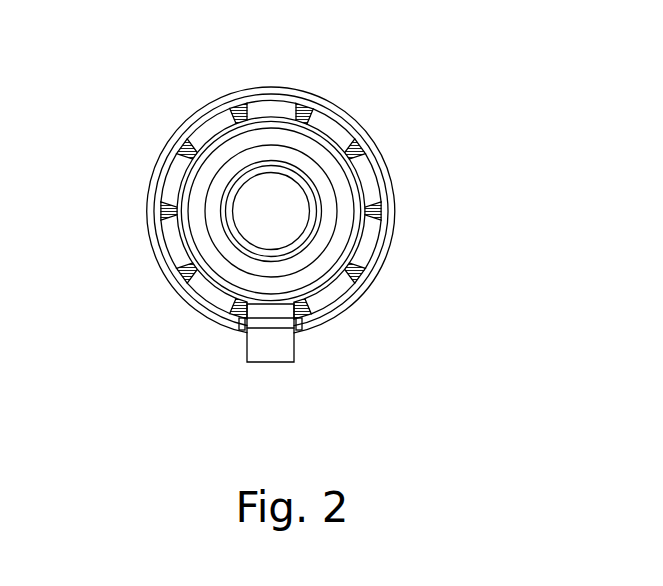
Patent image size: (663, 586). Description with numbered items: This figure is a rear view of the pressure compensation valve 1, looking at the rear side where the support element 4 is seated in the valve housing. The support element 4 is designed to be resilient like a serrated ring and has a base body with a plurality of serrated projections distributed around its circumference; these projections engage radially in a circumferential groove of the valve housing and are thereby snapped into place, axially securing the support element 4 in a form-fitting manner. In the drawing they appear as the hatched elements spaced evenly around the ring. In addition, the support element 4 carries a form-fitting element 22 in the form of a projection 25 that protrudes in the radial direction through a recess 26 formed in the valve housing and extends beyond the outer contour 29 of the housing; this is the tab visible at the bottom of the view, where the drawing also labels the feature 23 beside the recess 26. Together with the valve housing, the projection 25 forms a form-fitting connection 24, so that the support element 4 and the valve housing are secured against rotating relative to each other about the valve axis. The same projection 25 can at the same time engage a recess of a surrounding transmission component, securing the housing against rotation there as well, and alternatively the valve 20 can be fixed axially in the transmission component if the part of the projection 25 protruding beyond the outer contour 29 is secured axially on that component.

The pressure compensation valve 1 is at (323, 195).
The valve 20 is at (404, 119).
The support element 4 is at (332, 258).
The form-fitting element 22 is at (278, 363).
The lug 23 is at (301, 331).
The form-fitting connection 24 is at (242, 332).
The projection 25 is at (287, 343).
The recess 26 is at (257, 205).
The outer contour 29 is at (290, 83).